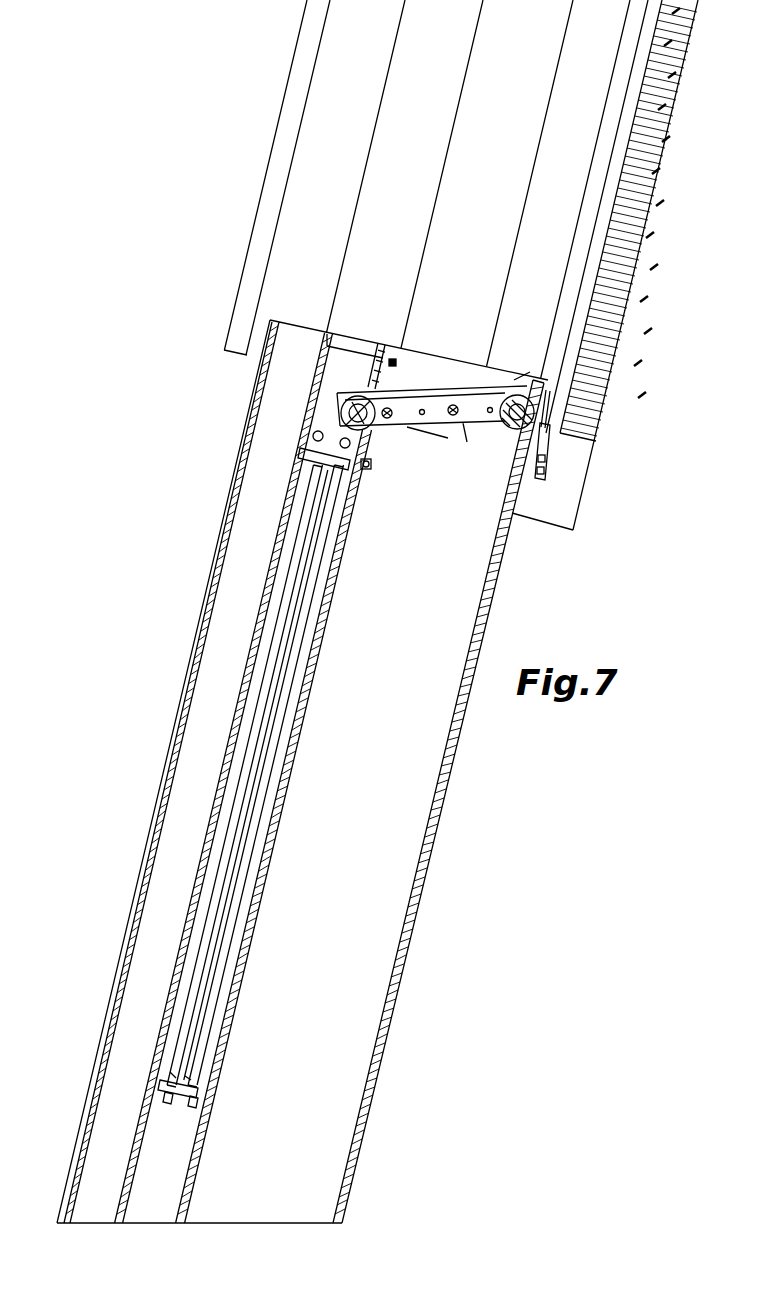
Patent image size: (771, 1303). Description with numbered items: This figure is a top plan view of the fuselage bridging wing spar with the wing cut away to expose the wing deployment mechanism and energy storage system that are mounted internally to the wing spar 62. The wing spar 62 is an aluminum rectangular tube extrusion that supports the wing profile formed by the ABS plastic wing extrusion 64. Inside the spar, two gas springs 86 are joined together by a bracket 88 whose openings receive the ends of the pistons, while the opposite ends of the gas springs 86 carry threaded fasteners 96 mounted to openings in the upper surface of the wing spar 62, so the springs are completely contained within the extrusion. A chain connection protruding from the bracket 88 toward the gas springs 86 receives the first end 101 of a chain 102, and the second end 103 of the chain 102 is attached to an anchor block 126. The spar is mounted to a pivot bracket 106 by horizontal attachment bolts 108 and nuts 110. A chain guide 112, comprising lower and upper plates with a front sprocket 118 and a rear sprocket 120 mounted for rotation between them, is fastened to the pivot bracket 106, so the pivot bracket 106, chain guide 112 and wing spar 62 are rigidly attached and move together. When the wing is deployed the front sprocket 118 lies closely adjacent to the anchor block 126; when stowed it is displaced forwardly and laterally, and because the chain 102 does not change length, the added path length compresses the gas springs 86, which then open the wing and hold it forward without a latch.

The wing spar 62 is at (249, 925).
The wing extrusion 64 is at (413, 917).
The gas springs 86 is at (283, 606).
The bracket 88 is at (177, 1093).
The threaded fasteners 96 is at (312, 426).
The first end of chain 101 is at (190, 1067).
The chain 102 is at (240, 833).
The second end of chain 103 is at (548, 460).
The pivot bracket 106 is at (410, 375).
The attachment bolts 108 is at (303, 453).
The nuts 110 is at (368, 468).
The chain guide 112 is at (437, 427).
The front sprocket 118 is at (500, 393).
The rear sprocket 120 is at (343, 407).
The anchor block 126 is at (546, 472).